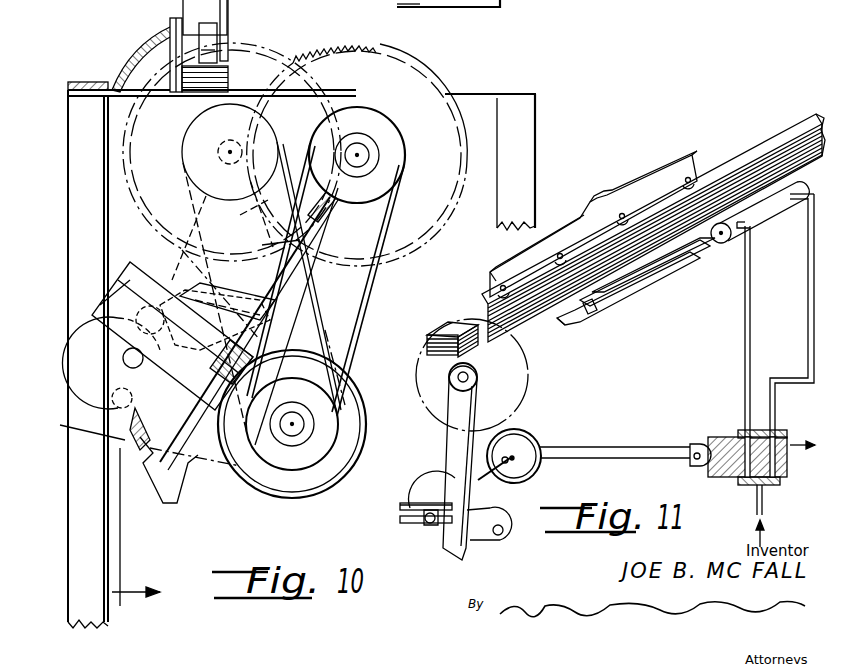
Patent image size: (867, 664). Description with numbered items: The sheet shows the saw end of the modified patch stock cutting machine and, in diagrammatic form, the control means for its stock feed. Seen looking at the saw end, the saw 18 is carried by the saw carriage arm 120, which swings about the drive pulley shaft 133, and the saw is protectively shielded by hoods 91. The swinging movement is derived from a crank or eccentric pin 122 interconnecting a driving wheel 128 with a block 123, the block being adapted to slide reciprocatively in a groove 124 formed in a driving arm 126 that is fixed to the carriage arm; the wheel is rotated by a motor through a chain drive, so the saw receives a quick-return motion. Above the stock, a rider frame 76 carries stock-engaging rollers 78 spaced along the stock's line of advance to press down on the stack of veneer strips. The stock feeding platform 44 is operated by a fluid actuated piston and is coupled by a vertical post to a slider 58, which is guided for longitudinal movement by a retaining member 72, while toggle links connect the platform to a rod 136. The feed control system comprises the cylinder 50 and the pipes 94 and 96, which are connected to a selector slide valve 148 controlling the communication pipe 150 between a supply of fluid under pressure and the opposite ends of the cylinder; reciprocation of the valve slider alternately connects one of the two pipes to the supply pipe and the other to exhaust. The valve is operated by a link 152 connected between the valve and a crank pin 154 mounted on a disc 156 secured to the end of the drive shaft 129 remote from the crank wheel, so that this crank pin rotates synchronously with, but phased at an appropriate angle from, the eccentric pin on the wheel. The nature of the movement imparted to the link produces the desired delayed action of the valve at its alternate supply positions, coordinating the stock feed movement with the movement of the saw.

In FIG. 10, the saw 18 is at (410, 78).
In FIG. 11, the stock feeding platform 44 is at (719, 230).
In FIG. 11, the cylinder 50 is at (758, 216).
In FIG. 11, the slider 58 is at (582, 320).
In FIG. 11, the retaining member 72 is at (618, 315).
In FIG. 10, the frame 76 is at (229, 13).
In FIG. 10, the stock-engaging rollers 78 is at (207, 22).
In FIG. 10, the hoods 91 is at (148, 46).
In FIG. 11, the pipe 94 is at (808, 344).
In FIG. 11, the pipe 96 is at (751, 297).
In FIG. 10, the saw carriage arm 120 is at (308, 322).
In FIG. 11, the saw carriage arm 120 is at (456, 448).
In FIG. 10, the eccentric pin 122 is at (145, 318).
In FIG. 11, the eccentric pin 122 is at (432, 528).
In FIG. 10, the block 123 is at (130, 360).
In FIG. 11, the block 123 is at (418, 526).
In FIG. 10, the groove 124 is at (152, 305).
In FIG. 11, the groove 124 is at (410, 515).
In FIG. 10, the driving arm 126 is at (160, 292).
In FIG. 10, the driving wheel 128 is at (82, 332).
In FIG. 11, the driving wheel 128 is at (424, 490).
In FIG. 11, the drive shaft 129 is at (483, 480).
In FIG. 10, the drive pulley shaft 133 is at (301, 430).
In FIG. 11, the drive pulley shaft 133 is at (498, 536).
In FIG. 11, the rod 136 is at (633, 288).
In FIG. 11, the selector slide valve 148 is at (735, 440).
In FIG. 11, the communication pipe 150 is at (764, 504).
In FIG. 11, the link 152 is at (636, 446).
In FIG. 11, the crank pin 154 is at (524, 442).
In FIG. 11, the disc 156 is at (530, 472).